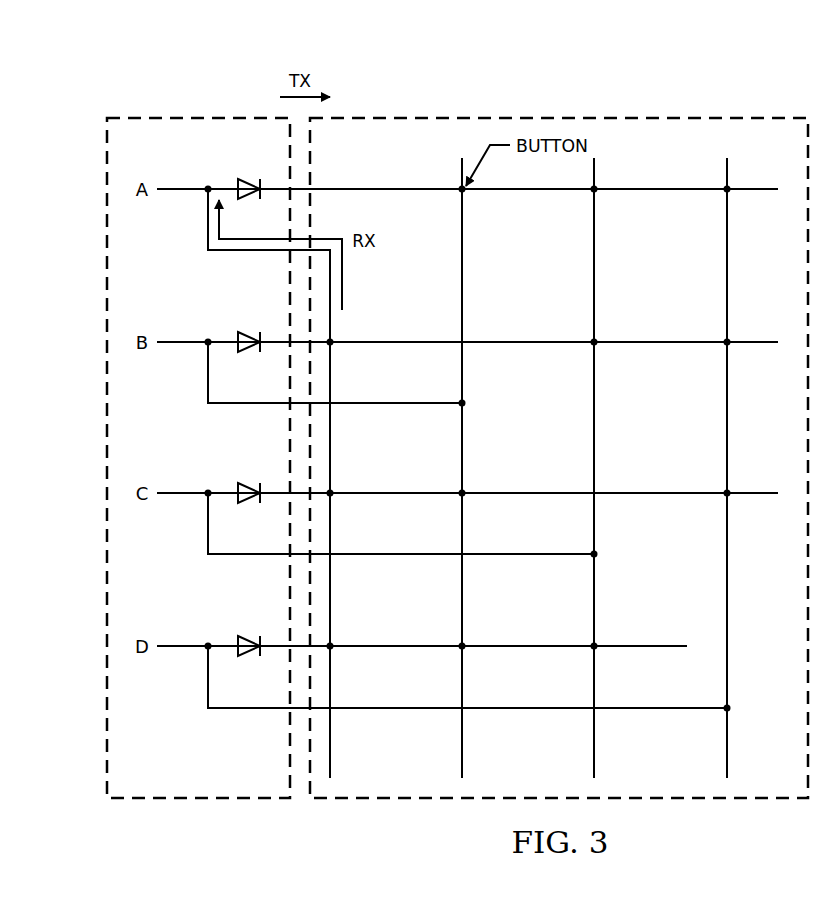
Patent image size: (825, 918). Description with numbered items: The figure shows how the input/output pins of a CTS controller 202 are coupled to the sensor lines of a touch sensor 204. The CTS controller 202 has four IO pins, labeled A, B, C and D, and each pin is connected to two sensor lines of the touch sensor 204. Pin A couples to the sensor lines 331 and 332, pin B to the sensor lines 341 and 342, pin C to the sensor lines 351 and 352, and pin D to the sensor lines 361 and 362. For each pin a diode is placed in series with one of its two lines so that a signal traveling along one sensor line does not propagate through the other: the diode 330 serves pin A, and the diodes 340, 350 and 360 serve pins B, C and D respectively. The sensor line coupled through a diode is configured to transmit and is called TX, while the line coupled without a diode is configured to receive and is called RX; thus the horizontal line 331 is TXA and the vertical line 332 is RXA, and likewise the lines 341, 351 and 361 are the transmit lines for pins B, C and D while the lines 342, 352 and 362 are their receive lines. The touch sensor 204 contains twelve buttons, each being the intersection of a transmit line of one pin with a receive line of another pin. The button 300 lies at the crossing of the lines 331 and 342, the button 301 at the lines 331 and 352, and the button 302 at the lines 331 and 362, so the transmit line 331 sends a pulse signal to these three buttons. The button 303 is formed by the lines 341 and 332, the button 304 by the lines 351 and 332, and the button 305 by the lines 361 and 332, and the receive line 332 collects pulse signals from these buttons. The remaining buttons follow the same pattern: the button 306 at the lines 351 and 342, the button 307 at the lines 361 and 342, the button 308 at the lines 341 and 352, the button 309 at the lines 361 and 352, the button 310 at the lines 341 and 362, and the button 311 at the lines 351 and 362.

The CTS controller 202 is at (160, 116).
The touch sensor 204 is at (635, 116).
The button 300 is at (466, 196).
The button 301 is at (598, 185).
The button 302 is at (731, 185).
The button 303 is at (333, 348).
The button 304 is at (333, 500).
The button 305 is at (333, 652).
The button 306 is at (466, 500).
The button 307 is at (466, 652).
The button 308 is at (599, 338).
The button 309 is at (598, 652).
The button 310 is at (732, 338).
The button 311 is at (731, 497).
The diode 330 is at (253, 178).
The diode 340 is at (253, 331).
The diode 350 is at (253, 482).
The diode 360 is at (253, 635).
The sensor line 331 is at (666, 186).
The sensor line 341 is at (666, 339).
The sensor line 351 is at (666, 496).
The sensor line 361 is at (666, 649).
The sensor line 332 is at (331, 748).
The sensor line 342 is at (464, 262).
The sensor line 352 is at (596, 418).
The sensor line 362 is at (729, 605).